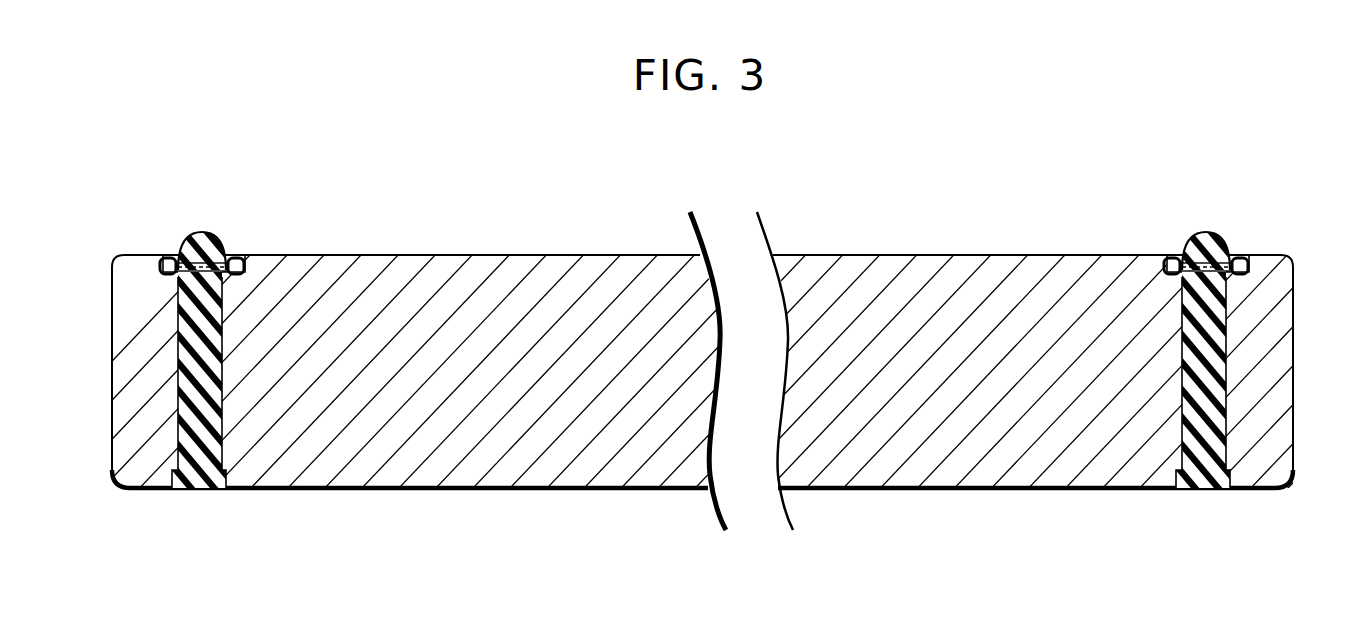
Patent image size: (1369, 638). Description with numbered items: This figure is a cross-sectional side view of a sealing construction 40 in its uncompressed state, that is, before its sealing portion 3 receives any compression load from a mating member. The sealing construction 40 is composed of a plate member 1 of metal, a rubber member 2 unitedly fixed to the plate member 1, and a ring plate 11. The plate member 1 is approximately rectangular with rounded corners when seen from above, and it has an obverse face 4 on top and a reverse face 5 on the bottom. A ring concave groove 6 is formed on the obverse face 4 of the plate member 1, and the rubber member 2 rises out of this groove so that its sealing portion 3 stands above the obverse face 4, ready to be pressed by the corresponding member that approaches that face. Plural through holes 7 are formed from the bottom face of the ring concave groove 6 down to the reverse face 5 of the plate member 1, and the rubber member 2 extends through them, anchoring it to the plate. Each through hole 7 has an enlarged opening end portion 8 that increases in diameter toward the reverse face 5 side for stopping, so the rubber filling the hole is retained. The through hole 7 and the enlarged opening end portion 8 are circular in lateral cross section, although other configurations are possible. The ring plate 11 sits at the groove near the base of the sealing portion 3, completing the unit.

The sealing construction 40 is at (954, 198).
The plate member 1 is at (853, 250).
The rubber member 2 is at (180, 410).
The sealing portion 3 is at (200, 240).
The obverse face 4 is at (515, 256).
The reverse face 5 is at (547, 492).
The ring concave groove 6 is at (172, 260).
The through hole 7 is at (185, 357).
The enlarged opening end portion 8 is at (200, 490).
The ring plate 11 is at (220, 252).